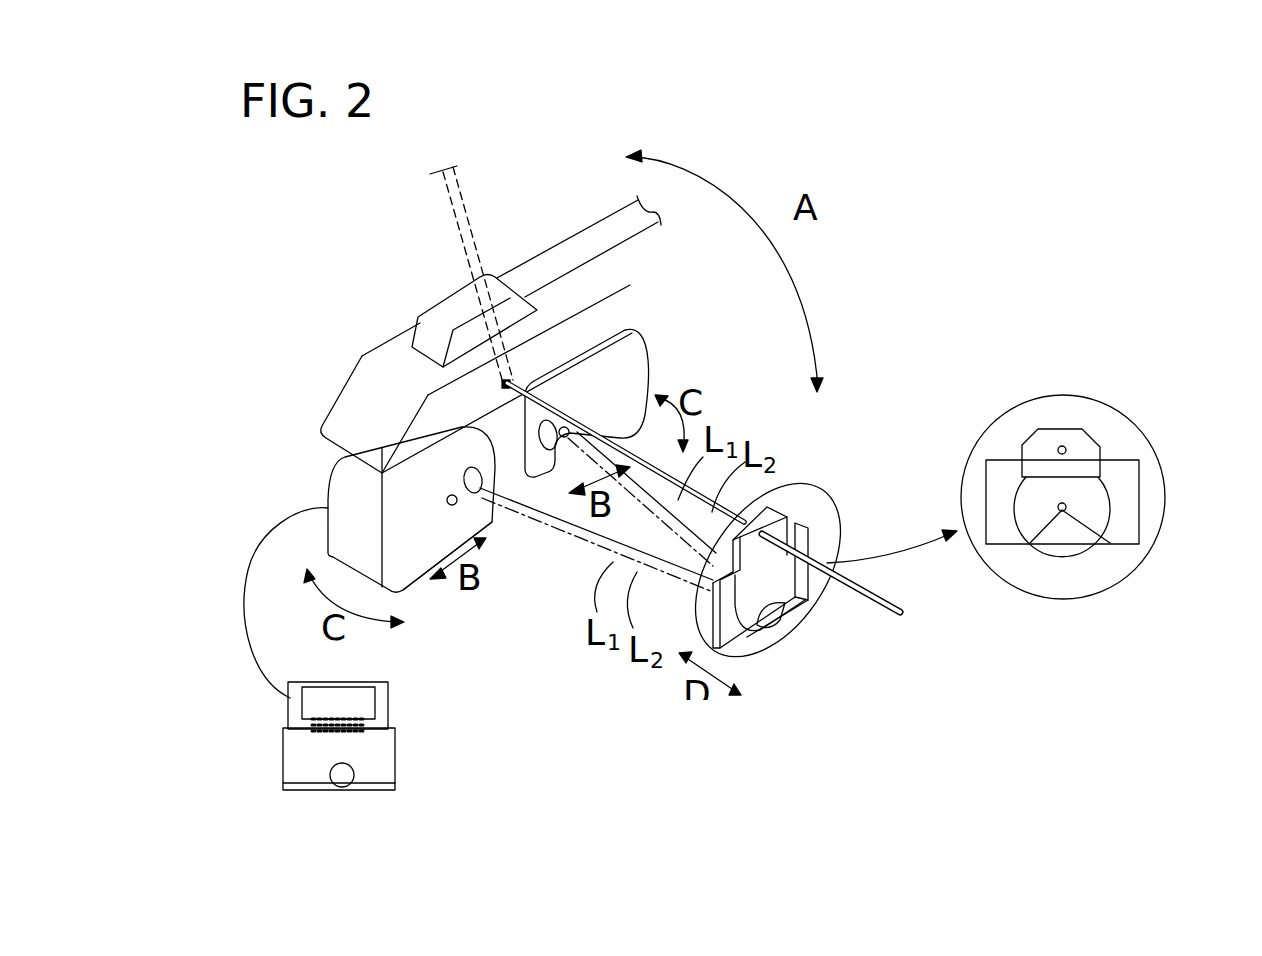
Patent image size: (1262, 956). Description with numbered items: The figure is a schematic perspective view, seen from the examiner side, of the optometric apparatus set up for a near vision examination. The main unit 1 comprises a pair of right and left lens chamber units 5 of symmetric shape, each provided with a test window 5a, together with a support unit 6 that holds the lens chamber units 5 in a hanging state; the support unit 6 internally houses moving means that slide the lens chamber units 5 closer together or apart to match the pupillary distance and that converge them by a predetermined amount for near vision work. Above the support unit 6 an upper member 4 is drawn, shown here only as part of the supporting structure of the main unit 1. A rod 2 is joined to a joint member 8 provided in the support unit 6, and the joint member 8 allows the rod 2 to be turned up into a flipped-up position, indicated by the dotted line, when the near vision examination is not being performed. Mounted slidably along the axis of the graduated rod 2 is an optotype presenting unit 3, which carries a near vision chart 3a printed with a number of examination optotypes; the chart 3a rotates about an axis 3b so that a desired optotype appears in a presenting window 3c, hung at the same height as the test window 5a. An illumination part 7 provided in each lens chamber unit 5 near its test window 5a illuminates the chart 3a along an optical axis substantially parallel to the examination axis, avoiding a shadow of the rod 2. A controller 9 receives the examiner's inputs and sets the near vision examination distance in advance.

The main unit 1 is at (360, 298).
The rod 2 is at (800, 485).
The optotype presenting unit 3 is at (810, 537).
The near vision chart 3a is at (1065, 550).
The axis 3b is at (1067, 507).
The presenting window 3c is at (1083, 527).
The support bar 4 is at (558, 252).
The lens chamber unit 5 is at (627, 368).
The test window 5a is at (497, 512).
The support unit 6 is at (360, 410).
The illumination part 7 is at (647, 453).
The joint member 8 is at (613, 312).
The controller 9 is at (293, 770).